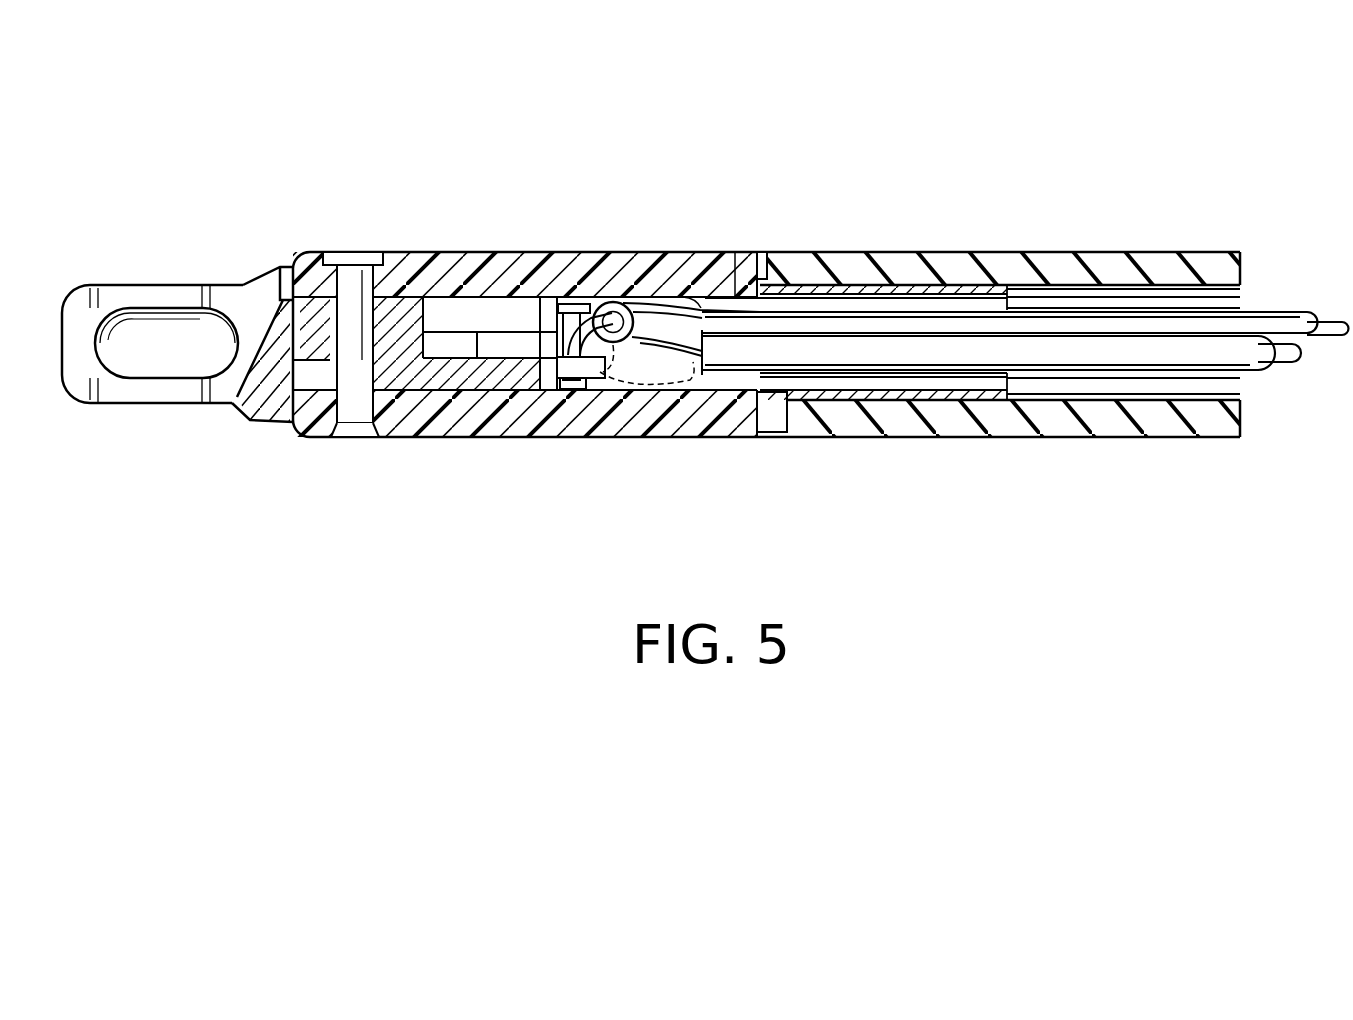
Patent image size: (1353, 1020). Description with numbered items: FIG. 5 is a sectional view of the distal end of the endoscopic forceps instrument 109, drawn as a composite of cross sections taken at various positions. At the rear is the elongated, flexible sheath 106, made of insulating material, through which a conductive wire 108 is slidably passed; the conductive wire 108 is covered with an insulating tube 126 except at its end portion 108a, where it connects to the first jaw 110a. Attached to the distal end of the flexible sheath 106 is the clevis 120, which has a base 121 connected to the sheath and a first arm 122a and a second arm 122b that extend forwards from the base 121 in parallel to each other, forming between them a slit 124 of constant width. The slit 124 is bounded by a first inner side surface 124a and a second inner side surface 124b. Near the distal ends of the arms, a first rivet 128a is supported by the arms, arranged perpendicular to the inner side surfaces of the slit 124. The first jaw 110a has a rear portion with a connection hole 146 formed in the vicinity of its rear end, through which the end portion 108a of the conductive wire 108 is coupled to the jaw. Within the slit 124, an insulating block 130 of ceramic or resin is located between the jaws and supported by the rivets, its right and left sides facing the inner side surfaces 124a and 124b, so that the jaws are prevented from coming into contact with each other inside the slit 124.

The fastener assembly 109 is at (617, 149).
The clevis 120 is at (506, 250).
The base 121 is at (742, 256).
The second arm 122b is at (431, 252).
The first arm 122a is at (462, 410).
The insulating block 130 is at (393, 343).
The connection hole 146 is at (558, 383).
The end portion 108a is at (597, 383).
The second inner side surface 124b is at (693, 296).
The slit 124 is at (723, 387).
The first inner side surface 124a is at (687, 383).
The flexible sheath 106 is at (1150, 252).
The conductive wire 108 is at (1088, 298).
The insulating tube 126 is at (1283, 318).
The first jaw 110a is at (158, 353).
The first rivet 128a is at (301, 258).